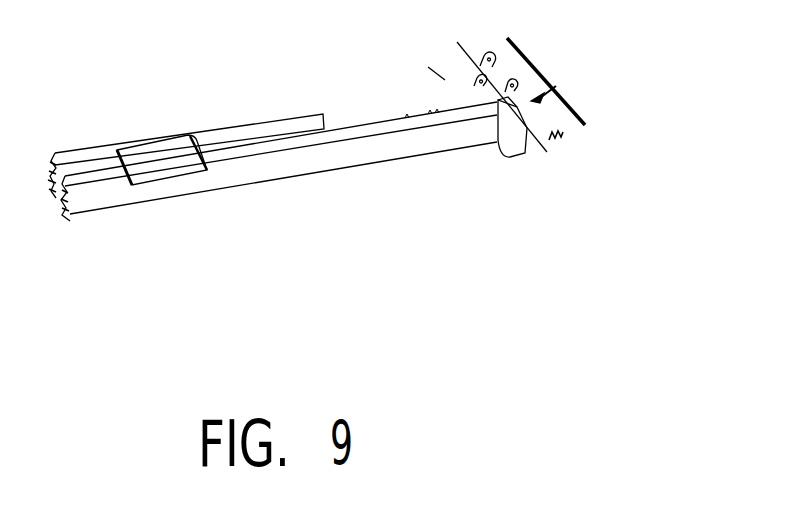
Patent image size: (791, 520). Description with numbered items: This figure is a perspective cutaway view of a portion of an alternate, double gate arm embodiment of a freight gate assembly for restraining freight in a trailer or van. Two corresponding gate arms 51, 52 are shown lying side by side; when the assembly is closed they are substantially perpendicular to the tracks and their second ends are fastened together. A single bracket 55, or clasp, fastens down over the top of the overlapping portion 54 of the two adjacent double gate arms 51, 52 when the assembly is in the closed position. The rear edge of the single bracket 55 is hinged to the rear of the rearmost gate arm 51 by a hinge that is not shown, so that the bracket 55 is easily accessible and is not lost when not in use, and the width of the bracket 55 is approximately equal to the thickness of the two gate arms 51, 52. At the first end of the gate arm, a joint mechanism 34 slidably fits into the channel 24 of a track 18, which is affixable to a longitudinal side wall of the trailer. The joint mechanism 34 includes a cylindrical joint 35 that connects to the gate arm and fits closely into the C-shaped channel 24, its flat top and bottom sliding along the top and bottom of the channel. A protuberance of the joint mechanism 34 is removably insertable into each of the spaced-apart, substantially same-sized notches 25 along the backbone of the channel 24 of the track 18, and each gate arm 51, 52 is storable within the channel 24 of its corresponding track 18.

The gate arm 51 is at (70, 158).
The gate arm 52 is at (351, 158).
The overlapping portion 54 is at (155, 208).
The single bracket 55 is at (157, 153).
The channel 24 is at (488, 110).
The notch 25 is at (505, 82).
The joint mechanism 34 is at (553, 88).
The cylindrical joint 35 is at (533, 111).
The track 18 is at (567, 128).